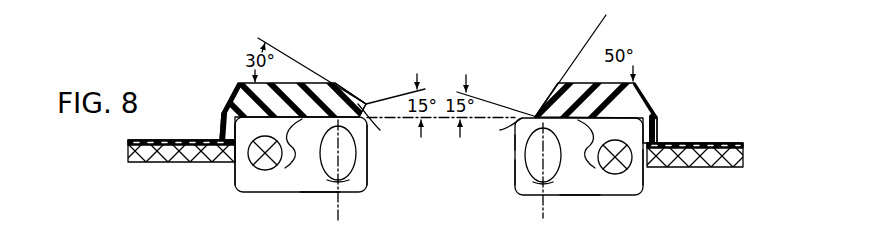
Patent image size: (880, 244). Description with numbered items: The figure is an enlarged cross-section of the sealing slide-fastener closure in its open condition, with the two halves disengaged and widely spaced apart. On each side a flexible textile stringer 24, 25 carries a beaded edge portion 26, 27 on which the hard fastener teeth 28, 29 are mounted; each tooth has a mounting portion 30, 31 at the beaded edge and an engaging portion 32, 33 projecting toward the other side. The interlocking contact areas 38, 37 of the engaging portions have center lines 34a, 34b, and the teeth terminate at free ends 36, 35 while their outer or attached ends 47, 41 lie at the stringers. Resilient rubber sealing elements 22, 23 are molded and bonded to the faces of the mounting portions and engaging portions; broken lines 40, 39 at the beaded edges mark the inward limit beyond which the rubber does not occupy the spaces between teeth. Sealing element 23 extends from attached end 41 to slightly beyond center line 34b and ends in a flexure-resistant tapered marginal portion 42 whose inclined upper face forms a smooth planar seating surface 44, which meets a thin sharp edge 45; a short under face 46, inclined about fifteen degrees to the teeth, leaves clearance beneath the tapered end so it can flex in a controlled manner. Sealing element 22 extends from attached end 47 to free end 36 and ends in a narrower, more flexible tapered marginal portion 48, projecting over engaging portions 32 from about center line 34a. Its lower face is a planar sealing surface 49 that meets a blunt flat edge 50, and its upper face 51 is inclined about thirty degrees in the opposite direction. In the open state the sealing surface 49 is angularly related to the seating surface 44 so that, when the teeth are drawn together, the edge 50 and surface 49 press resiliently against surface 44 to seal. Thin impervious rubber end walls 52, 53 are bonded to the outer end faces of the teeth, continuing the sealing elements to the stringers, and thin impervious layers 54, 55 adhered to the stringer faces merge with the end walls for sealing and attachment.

The sealing element 22 is at (233, 90).
The sealing element 23 is at (651, 103).
The stringer 24 is at (145, 162).
The stringer 25 is at (730, 167).
The beaded edge portion 26 is at (262, 172).
The beaded edge portion 27 is at (622, 173).
The fastener element or tooth 28 is at (318, 193).
The fastener element or tooth 29 is at (583, 196).
The mounting portion 30 is at (248, 183).
The mounting portion 31 is at (633, 184).
The engaging portion 32 is at (325, 183).
The engaging portion 33 is at (558, 184).
The center line of interlocking contact area 34a is at (338, 210).
The center line of interlocking contact area 34b is at (543, 208).
The free end 35 is at (515, 172).
The free end 36 is at (368, 163).
The interlocking contact area 37 is at (525, 178).
The interlocking contact area 38 is at (343, 173).
The broken line 39 is at (580, 149).
The broken line 40 is at (300, 150).
The outer or attached end 41 is at (648, 173).
The tapered marginal portion 42 is at (557, 84).
The seating surface 44 is at (551, 100).
The thin sharp edge 45 is at (497, 129).
The under face 46 is at (520, 140).
The outer or attached end 47 is at (233, 172).
The tapered marginal portion 48 is at (344, 103).
The sealing surface 49 is at (383, 122).
The flat edge 50 is at (368, 103).
The upper face 51 is at (349, 97).
The end wall 52 is at (222, 130).
The end wall 53 is at (652, 131).
The impervious layer 54 is at (130, 142).
The impervious layer 55 is at (745, 150).